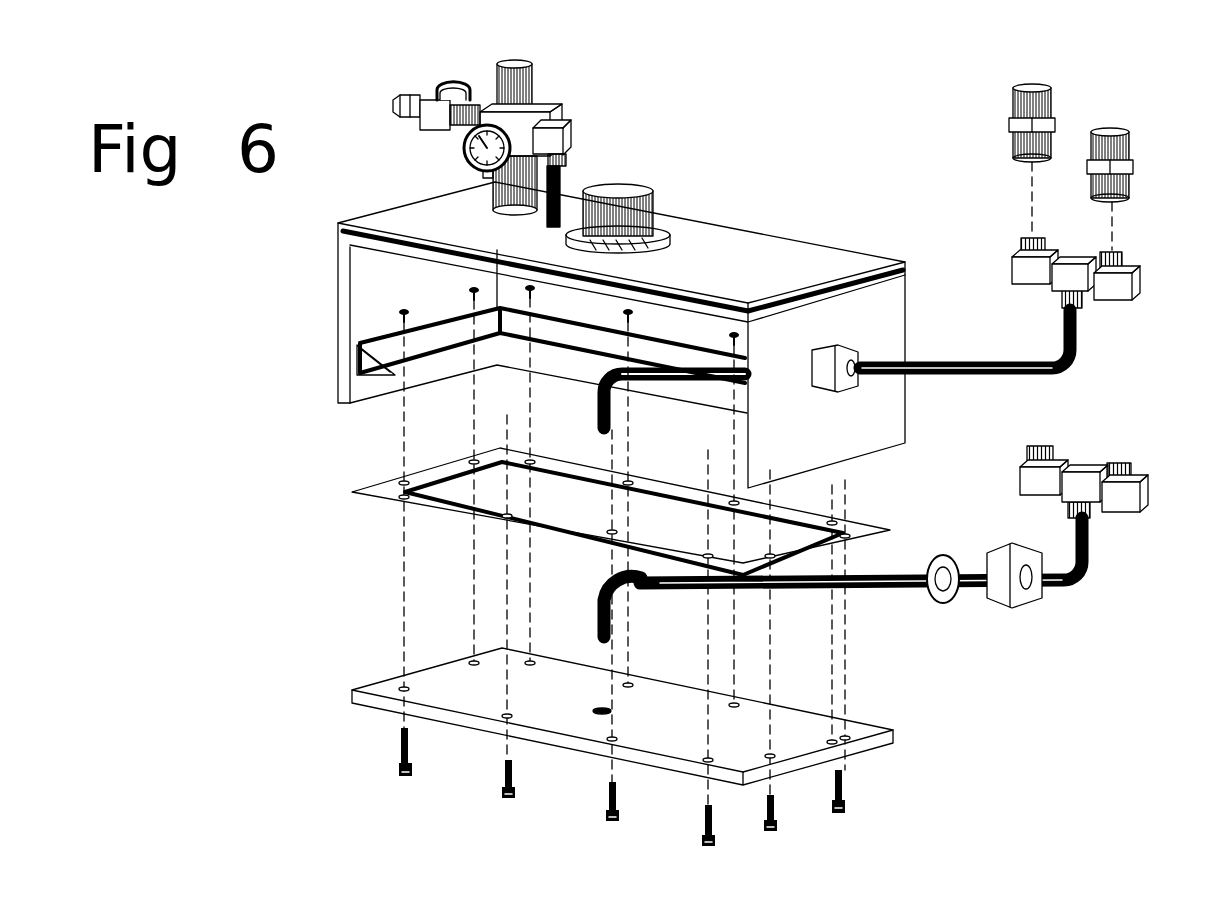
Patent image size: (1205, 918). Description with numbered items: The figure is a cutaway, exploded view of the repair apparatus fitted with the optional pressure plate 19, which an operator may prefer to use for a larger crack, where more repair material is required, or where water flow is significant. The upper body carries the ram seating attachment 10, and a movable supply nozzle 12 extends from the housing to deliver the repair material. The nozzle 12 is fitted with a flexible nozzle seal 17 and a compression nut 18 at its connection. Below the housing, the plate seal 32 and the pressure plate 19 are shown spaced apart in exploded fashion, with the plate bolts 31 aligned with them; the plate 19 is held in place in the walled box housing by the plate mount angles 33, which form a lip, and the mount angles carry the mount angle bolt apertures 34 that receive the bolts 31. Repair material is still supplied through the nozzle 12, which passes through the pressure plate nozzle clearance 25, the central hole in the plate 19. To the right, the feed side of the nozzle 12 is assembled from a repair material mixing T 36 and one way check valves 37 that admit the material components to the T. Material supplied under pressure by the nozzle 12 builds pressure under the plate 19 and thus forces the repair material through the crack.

The ram seating attachment 10 is at (648, 176).
The movable supply nozzle 12 is at (1060, 378).
The flexible nozzle seal 17 is at (942, 620).
The compression nut 18 is at (1015, 615).
The optional pressure plate 19 is at (880, 748).
The pressure plate nozzle clearance 25 is at (590, 710).
The plate bolts 31 is at (405, 267).
The plate seal 32 is at (347, 496).
The plate mount angles 33 is at (356, 412).
The mount angle bolt apertures 34 is at (405, 365).
The repair material mixing T 36 is at (1085, 305).
The one way check valves 37 is at (1115, 125).